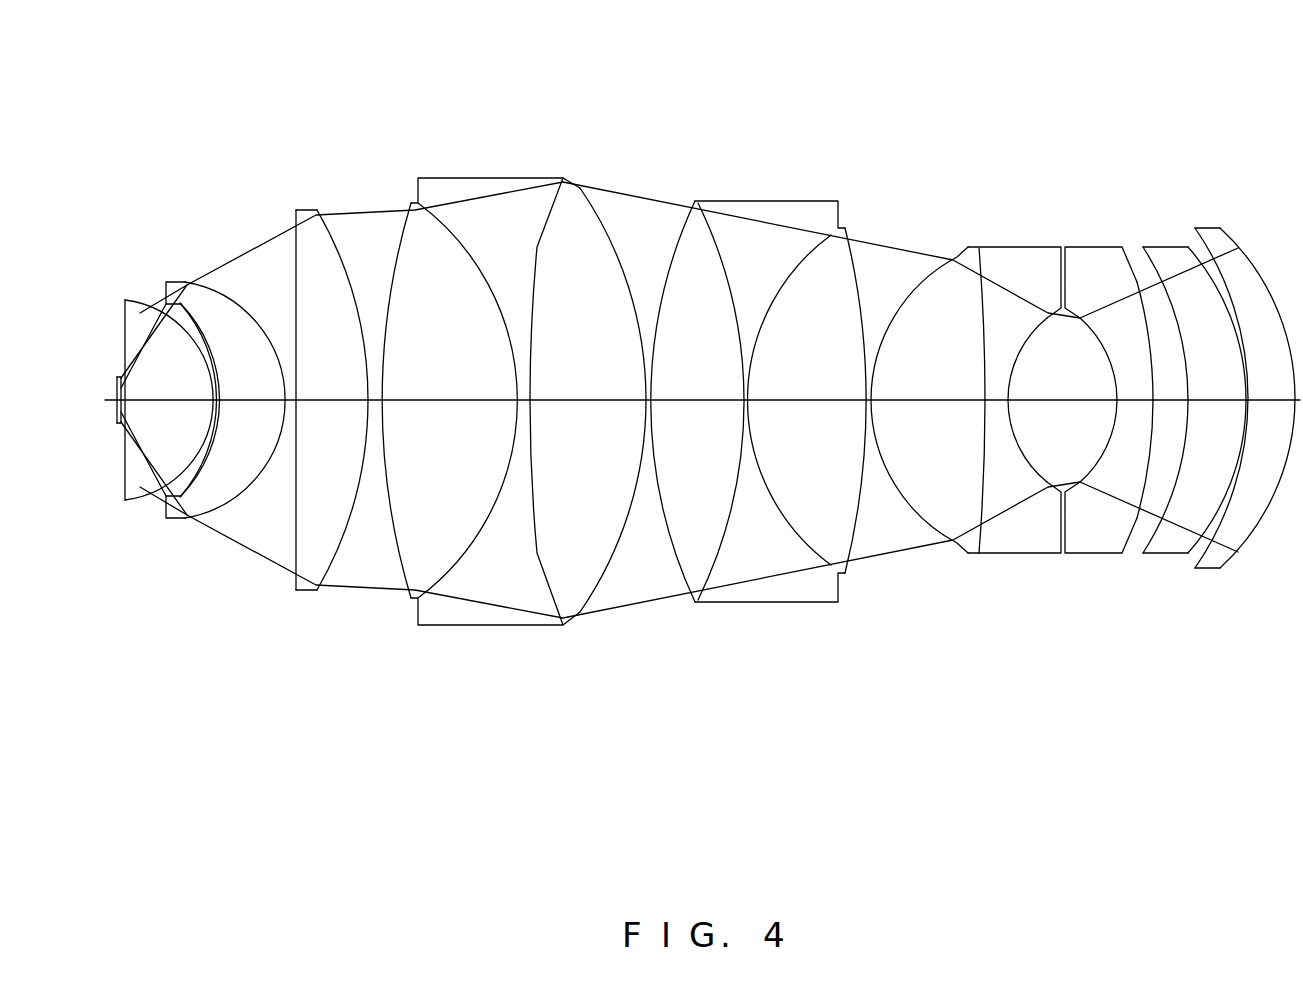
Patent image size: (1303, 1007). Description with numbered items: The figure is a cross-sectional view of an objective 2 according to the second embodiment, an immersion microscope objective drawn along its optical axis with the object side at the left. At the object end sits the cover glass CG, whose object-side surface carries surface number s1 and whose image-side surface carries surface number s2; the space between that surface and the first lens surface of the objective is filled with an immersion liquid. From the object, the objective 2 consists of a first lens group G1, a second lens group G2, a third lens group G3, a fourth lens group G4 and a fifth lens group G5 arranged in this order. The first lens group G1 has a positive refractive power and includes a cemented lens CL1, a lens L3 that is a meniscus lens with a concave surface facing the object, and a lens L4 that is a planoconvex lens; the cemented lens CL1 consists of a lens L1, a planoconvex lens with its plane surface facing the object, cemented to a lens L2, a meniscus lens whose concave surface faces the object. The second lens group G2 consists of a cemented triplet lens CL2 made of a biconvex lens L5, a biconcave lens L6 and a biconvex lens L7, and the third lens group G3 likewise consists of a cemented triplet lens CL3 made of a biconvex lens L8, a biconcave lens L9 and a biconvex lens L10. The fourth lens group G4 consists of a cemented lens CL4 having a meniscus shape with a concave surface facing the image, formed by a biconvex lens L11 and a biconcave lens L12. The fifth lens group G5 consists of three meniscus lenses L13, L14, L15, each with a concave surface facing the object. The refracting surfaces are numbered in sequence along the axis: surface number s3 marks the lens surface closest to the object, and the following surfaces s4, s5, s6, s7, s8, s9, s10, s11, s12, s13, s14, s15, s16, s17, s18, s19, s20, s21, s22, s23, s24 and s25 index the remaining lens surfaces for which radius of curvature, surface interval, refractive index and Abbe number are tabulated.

The objective 2 is at (1296, 52).
The cover glass CG is at (94, 396).
The first lens group G1 is at (241, 457).
The second lens group G2 is at (507, 438).
The third lens group G3 is at (779, 437).
The fourth lens group G4 is at (967, 437).
The fifth lens group G5 is at (1180, 442).
The cemented lens CL1 is at (167, 462).
The cemented triplet lens CL2 is at (507, 413).
The cemented triplet lens CL3 is at (779, 411).
The cemented lens CL4 is at (967, 412).
The lens L1 is at (166, 451).
The lens L2 is at (193, 433).
The lens L3 is at (225, 423).
The lens L4 is at (315, 403).
The biconvex lens L5 is at (443, 392).
The biconcave lens L6 is at (531, 392).
The biconvex lens L7 is at (613, 384).
The biconvex lens L8 is at (703, 384).
The biconcave lens L9 is at (788, 383).
The biconvex lens L10 is at (860, 384).
The biconvex lens L11 is at (955, 383).
The biconcave lens L12 is at (1034, 400).
The meniscus lens L13 is at (1109, 388).
The meniscus lens L14 is at (1194, 395).
The meniscus lens L15 is at (1245, 411).
The surface number s1 is at (116, 380).
The surface number s2 is at (112, 355).
The surface number s3 is at (130, 345).
The surface number s4 is at (156, 330).
The surface number s5 is at (185, 283).
The surface number s6 is at (203, 332).
The surface number s7 is at (259, 335).
The surface number s8 is at (298, 253).
The surface number s9 is at (343, 240).
The surface number s10 is at (388, 263).
The surface number s11 is at (478, 262).
The surface number s12 is at (538, 267).
The surface number s13 is at (627, 282).
The surface number s14 is at (670, 272).
The surface number s15 is at (718, 282).
The surface number s16 is at (770, 285).
The surface number s17 is at (863, 285).
The surface number s18 is at (913, 282).
The surface number s19 is at (985, 322).
The surface number s20 is at (1043, 315).
The surface number s21 is at (1083, 312).
The surface number s22 is at (1148, 330).
The surface number s23 is at (1168, 305).
The surface number s24 is at (1222, 287).
The surface number s25 is at (1290, 332).